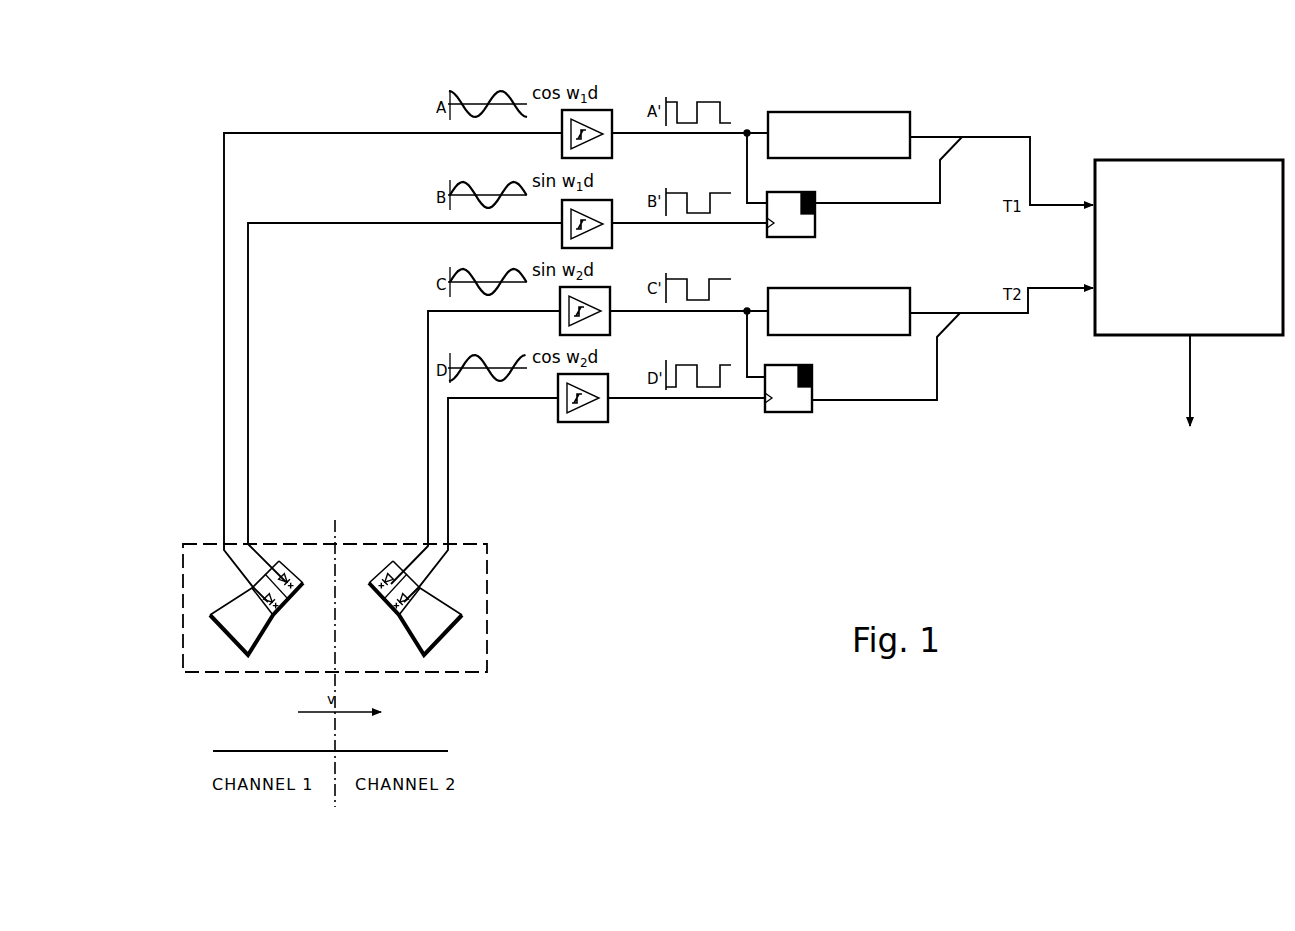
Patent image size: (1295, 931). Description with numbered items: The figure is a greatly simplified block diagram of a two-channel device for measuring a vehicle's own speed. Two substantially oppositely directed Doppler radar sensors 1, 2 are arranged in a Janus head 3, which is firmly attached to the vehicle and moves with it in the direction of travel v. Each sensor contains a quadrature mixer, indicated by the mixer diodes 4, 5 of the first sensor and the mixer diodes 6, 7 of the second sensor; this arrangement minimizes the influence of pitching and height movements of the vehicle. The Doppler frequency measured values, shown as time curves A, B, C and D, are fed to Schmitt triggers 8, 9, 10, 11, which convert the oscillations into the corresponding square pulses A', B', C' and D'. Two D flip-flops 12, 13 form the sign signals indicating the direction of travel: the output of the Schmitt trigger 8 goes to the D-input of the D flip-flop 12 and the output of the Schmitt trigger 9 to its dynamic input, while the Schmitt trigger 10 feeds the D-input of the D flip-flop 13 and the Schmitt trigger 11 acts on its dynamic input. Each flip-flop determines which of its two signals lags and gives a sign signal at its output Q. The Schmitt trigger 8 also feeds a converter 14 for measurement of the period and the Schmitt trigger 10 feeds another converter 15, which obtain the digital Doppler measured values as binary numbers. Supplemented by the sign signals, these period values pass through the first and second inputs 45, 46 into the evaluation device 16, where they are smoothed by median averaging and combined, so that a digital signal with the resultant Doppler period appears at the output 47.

The Doppler radar sensor 1 is at (233, 627).
The Doppler radar sensor 2 is at (439, 627).
The Janus head 3 is at (482, 586).
The mixer diode 4 is at (279, 599).
The mixer diode 5 is at (293, 576).
The mixer diode 6 is at (379, 576).
The mixer diode 7 is at (393, 599).
The Schmitt trigger 8 is at (610, 117).
The Schmitt trigger 9 is at (610, 207).
The Schmitt trigger 10 is at (608, 294).
The Schmitt trigger 11 is at (606, 381).
The D flip-flop 12 is at (800, 194).
The D flip-flop 13 is at (790, 367).
The converter for measurement of the period 14 is at (910, 116).
The converter for measurement of the period 15 is at (910, 294).
The evaluation device 16 is at (1186, 168).
The input of the evaluation device 45 is at (1073, 203).
The input of the evaluation device 46 is at (1073, 287).
The output of the evaluation device 47 is at (1188, 398).